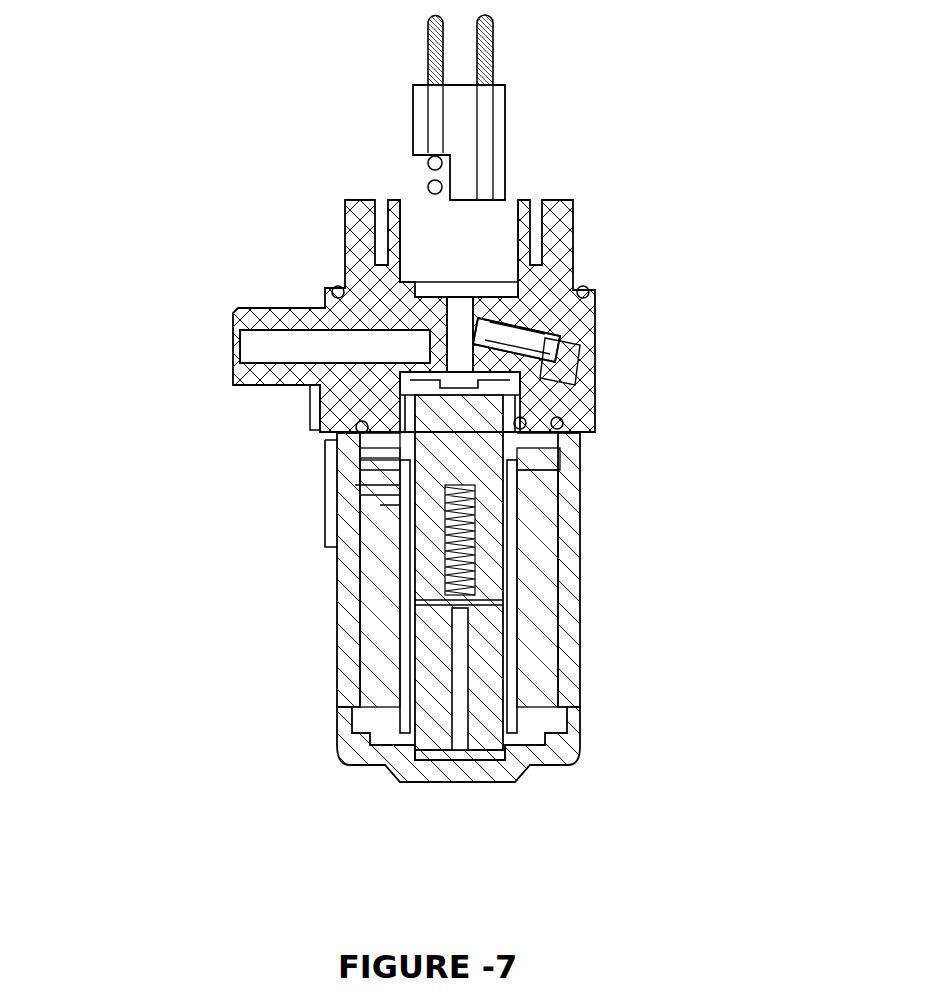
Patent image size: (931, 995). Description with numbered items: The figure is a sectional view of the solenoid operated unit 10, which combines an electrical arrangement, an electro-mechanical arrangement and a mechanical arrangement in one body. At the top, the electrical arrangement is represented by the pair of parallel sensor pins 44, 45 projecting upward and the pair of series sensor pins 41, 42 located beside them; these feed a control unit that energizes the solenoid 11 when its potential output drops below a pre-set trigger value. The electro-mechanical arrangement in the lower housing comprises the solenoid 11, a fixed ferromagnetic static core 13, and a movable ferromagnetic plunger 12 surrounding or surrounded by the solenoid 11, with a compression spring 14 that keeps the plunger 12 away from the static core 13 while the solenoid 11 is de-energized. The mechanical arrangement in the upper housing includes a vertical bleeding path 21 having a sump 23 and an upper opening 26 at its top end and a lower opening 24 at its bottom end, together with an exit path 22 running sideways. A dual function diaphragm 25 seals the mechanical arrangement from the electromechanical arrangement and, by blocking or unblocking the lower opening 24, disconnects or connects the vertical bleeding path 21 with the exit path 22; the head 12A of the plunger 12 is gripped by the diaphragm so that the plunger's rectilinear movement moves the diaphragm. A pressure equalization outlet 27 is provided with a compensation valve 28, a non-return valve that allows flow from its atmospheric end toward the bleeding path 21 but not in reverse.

The solenoid operated unit 10 is at (176, 575).
The solenoid 11 is at (490, 582).
The plunger 12 is at (467, 360).
The head of the plunger 12A is at (457, 393).
The static core 13 is at (490, 667).
The compression spring 14 is at (482, 509).
The vertical bleeding path 21 is at (455, 343).
The exit path 22 is at (282, 342).
The sump 23 is at (507, 230).
The lower opening 24 is at (470, 437).
The dual function diaphragm 25 is at (421, 376).
The upper opening 26 is at (460, 290).
The pressure equalization outlet 27 is at (520, 317).
The compensation valve 28 is at (532, 336).
The series sensor pin 41 is at (428, 155).
The series sensor pin 42 is at (428, 187).
The parallel sensor pin 44 is at (428, 43).
The parallel sensor pin 45 is at (493, 40).